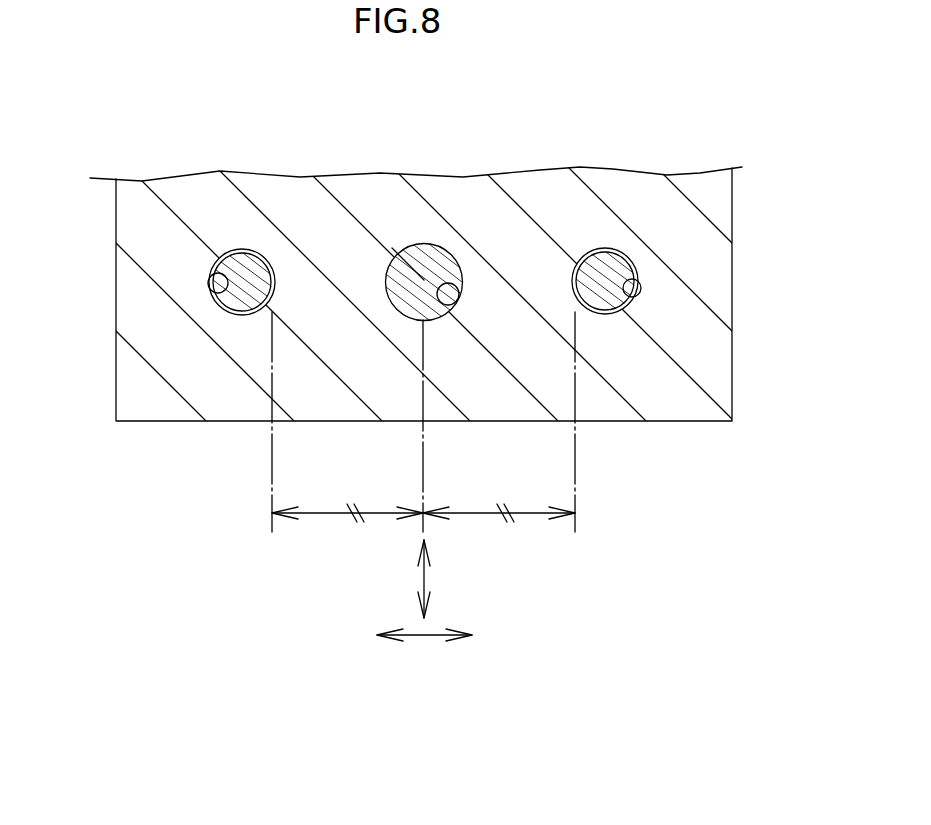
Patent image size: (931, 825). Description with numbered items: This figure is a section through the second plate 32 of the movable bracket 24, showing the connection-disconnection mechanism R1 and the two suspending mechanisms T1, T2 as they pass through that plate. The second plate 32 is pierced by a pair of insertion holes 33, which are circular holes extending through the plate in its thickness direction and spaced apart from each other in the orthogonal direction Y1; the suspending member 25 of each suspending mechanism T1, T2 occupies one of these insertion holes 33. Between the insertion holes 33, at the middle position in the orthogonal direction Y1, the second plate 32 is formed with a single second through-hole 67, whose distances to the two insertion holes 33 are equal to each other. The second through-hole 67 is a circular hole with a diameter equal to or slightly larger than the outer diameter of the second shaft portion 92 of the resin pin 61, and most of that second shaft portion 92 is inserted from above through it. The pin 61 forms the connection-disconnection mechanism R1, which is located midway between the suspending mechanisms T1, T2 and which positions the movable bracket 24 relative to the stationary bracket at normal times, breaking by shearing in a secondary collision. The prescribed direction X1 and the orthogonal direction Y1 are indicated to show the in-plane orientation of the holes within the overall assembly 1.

The apparatus 1 is at (686, 161).
The movable bracket 24 is at (735, 266).
The second plate 32 is at (718, 198).
The suspending member 25 is at (252, 275).
The insertion hole 33 is at (221, 284).
The pin 61 is at (437, 268).
The second through-hole 67 is at (438, 302).
The second shaft portion 92 is at (422, 277).
The suspending mechanism T1 is at (225, 247).
The suspending mechanism T2 is at (585, 248).
The connection-disconnection mechanism R1 is at (395, 245).
The prescribed direction X1 is at (425, 580).
The orthogonal direction Y1 is at (423, 640).